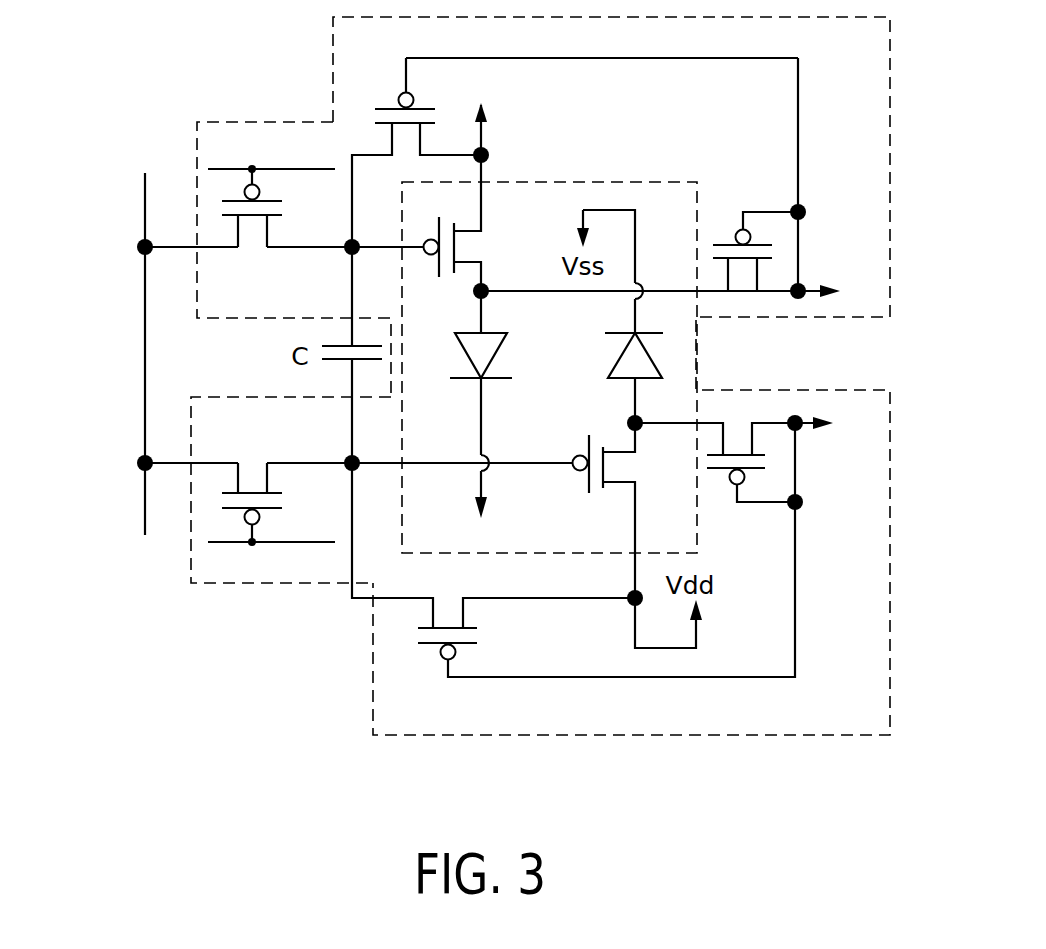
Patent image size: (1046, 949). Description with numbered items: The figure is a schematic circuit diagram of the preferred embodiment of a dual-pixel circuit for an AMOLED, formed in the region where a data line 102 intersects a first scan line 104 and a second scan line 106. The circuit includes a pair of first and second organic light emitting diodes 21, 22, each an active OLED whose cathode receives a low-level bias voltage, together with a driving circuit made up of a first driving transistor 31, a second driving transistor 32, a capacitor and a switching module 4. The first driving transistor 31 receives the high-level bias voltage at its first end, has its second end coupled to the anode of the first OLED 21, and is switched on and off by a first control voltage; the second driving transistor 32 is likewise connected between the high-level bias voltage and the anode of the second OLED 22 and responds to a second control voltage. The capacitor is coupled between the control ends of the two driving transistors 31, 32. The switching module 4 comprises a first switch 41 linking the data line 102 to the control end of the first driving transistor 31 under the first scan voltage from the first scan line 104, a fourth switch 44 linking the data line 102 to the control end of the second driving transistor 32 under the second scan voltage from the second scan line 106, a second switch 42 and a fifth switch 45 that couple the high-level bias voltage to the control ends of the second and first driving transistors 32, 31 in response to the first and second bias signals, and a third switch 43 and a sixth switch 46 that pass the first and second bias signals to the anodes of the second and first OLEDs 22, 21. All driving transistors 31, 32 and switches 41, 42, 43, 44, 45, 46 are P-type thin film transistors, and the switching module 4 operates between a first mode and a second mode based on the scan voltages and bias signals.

The switching module 4 is at (427, 735).
The data line 102 is at (145, 371).
The first scan line 104 is at (316, 168).
The second scan line 106 is at (313, 543).
The first switch 41 is at (253, 215).
The second switch 42 is at (427, 647).
The third switch 43 is at (760, 457).
The fourth switch 44 is at (253, 493).
The fifth switch 45 is at (397, 107).
The sixth switch 46 is at (724, 243).
The first driving transistor 31 is at (454, 228).
The second driving transistor 32 is at (623, 452).
The first organic light emitting diode 21 is at (470, 382).
The second organic light emitting diode 22 is at (617, 333).